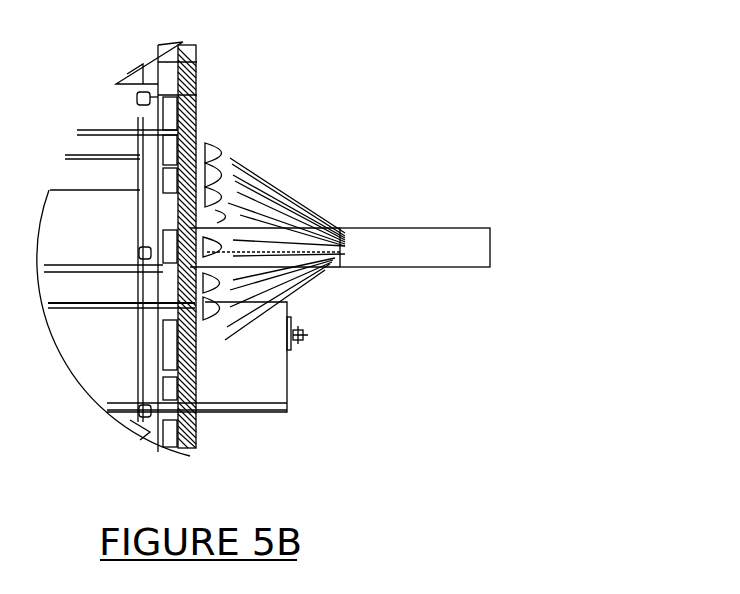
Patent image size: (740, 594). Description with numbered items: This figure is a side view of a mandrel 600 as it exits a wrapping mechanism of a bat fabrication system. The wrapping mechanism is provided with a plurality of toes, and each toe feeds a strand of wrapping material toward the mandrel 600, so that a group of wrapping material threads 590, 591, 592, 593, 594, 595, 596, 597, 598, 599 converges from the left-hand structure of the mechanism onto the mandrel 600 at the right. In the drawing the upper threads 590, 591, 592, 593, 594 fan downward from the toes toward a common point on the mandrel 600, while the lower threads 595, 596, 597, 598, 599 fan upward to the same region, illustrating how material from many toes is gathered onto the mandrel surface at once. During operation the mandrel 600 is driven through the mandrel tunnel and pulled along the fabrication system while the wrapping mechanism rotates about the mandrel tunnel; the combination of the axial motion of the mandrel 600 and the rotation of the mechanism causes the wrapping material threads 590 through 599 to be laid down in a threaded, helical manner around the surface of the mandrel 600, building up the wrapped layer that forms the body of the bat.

The wrapping material thread 590 is at (240, 162).
The wrapping material thread 591 is at (250, 182).
The wrapping material thread 592 is at (270, 202).
The wrapping material thread 593 is at (307, 227).
The wrapping material thread 594 is at (320, 240).
The wrapping material thread 595 is at (330, 250).
The wrapping material thread 596 is at (327, 260).
The wrapping material thread 597 is at (320, 267).
The wrapping material thread 598 is at (312, 278).
The wrapping material thread 599 is at (303, 290).
The mandrel 600 is at (440, 237).